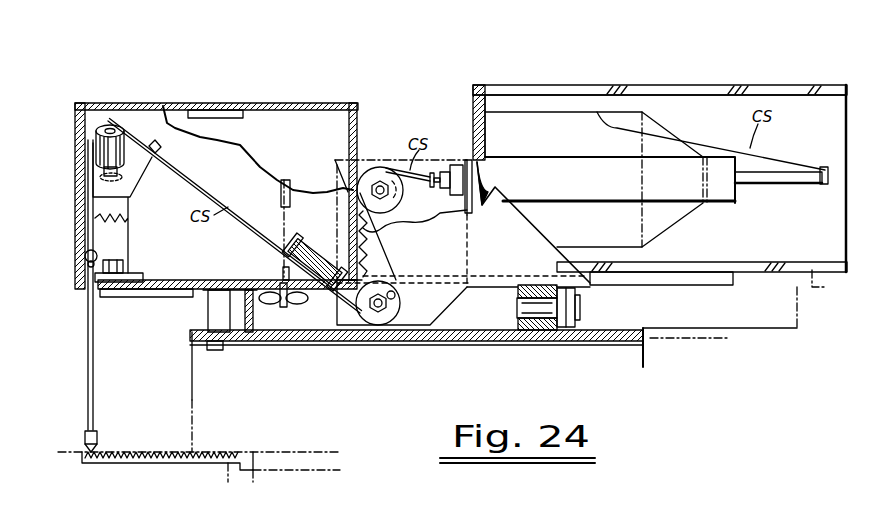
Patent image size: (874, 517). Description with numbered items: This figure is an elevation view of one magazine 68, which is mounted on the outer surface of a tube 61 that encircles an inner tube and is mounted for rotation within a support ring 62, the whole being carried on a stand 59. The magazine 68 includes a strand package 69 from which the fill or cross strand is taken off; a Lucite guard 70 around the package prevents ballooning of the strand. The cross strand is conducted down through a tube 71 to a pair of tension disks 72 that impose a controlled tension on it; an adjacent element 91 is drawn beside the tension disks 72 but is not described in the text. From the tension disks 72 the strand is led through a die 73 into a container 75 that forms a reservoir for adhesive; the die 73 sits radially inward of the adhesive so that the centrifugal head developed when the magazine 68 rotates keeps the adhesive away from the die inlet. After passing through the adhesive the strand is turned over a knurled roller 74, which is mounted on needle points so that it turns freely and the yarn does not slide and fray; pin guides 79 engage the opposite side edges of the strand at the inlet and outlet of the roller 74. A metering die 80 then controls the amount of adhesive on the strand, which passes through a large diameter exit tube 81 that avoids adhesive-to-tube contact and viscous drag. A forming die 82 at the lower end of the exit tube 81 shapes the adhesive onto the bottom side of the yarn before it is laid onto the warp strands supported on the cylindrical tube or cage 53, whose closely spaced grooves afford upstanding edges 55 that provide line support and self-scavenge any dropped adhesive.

The magazine 68 is at (445, 63).
The Lucite guard 70 is at (706, 88).
The strand package 69 is at (568, 112).
The tube 71 is at (788, 187).
The adjusting knob 91 is at (436, 170).
The support ring 62 is at (812, 270).
The knurled roller 74 is at (121, 131).
The pin guide 79 is at (156, 152).
The metering die 80 is at (131, 248).
The exit tube 81 is at (88, 333).
The forming die 82 is at (83, 433).
The die 73 is at (300, 247).
The tension disk 72 is at (402, 200).
The container 75 is at (220, 277).
The tube 61 is at (446, 341).
The upstanding edge 55 is at (161, 452).
The tube or cage 53 is at (80, 456).
The stand 59 is at (301, 452).